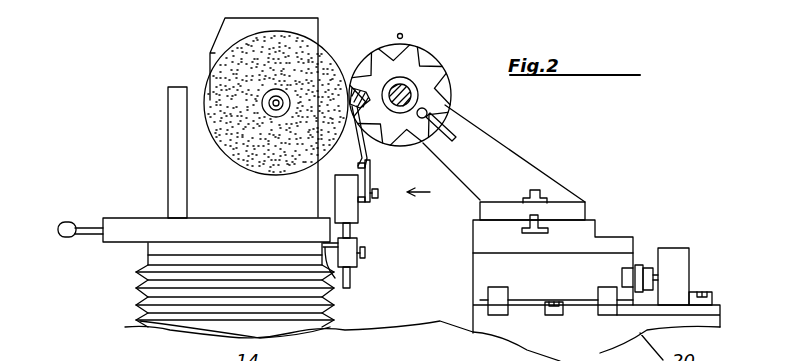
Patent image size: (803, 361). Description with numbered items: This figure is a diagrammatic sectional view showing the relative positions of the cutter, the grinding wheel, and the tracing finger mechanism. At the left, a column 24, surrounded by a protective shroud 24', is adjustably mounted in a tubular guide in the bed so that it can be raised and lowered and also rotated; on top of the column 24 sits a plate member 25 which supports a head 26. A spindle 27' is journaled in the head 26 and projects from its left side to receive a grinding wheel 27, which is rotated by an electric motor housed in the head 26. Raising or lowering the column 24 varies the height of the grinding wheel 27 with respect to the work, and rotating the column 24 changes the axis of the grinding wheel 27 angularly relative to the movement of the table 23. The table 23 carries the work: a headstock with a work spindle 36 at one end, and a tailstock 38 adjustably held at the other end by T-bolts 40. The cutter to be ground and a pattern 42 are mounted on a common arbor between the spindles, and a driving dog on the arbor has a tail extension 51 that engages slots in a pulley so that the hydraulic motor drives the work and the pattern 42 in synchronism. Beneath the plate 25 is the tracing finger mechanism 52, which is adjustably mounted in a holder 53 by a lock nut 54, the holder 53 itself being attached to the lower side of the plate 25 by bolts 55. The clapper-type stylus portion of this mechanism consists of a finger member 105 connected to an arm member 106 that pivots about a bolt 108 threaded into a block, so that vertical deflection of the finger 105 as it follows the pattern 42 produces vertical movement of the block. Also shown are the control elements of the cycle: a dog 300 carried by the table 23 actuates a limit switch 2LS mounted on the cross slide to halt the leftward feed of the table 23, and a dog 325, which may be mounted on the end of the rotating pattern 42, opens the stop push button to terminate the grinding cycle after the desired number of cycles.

The table 23 is at (585, 231).
The column 24 is at (206, 285).
The protective shroud 24' is at (202, 332).
The plate member 25 is at (140, 226).
The head 26 is at (195, 97).
The grinding wheel 27 is at (279, 92).
The spindle 27' is at (188, 109).
The work spindle 36 is at (412, 92).
The tailstock 38 is at (500, 150).
The T-bolts 40 is at (537, 190).
The pattern 42 is at (420, 60).
The tail extension 51 is at (406, 29).
The tracing finger mechanism 52 is at (434, 196).
The holder 53 is at (357, 245).
The lock nut 54 is at (365, 253).
The bolts 55 is at (350, 278).
The finger member 105 is at (362, 150).
The arm member 106 is at (372, 180).
The bolt 108 is at (378, 196).
The dog 300 is at (650, 268).
The dog 325 is at (463, 135).
The limit switch 2LS is at (680, 265).